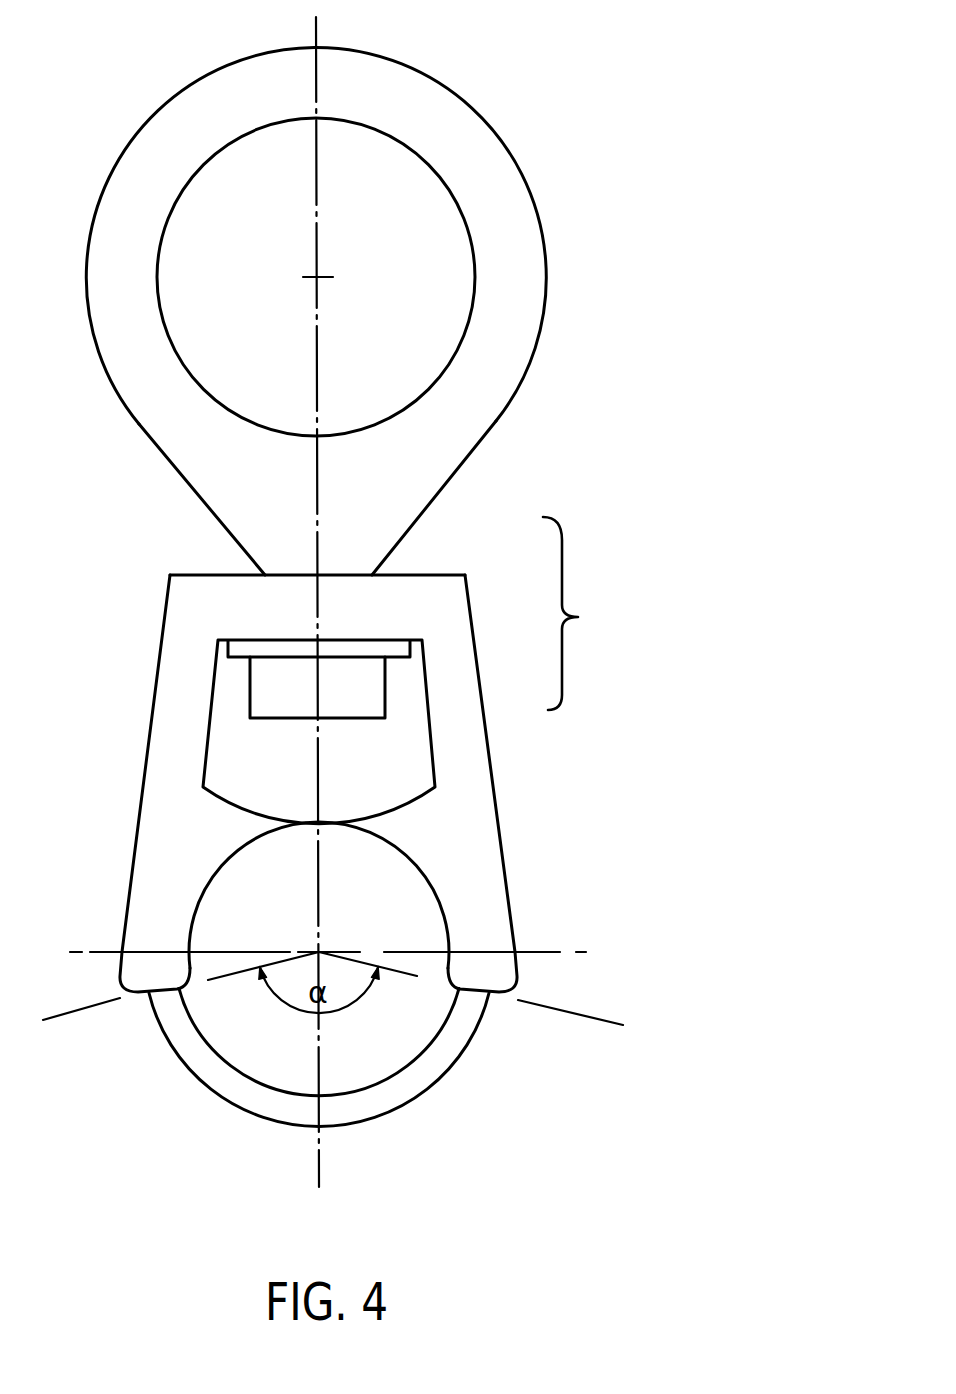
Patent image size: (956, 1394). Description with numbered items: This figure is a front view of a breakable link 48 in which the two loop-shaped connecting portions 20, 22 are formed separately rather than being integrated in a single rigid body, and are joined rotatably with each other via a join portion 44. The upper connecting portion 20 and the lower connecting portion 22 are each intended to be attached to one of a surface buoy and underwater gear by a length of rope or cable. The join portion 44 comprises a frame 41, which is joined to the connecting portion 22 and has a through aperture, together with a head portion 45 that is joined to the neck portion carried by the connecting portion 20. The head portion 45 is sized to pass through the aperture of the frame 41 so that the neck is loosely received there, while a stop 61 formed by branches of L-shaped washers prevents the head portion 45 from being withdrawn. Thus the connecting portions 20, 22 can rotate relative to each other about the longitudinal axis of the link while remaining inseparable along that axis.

The connecting portion 20 is at (405, 270).
The connecting portion 22 is at (413, 918).
The frame 41 is at (180, 603).
The join portion 44 is at (579, 613).
The head portion 45 is at (267, 697).
The breakable link 48 is at (728, 500).
The stop 61 is at (213, 658).